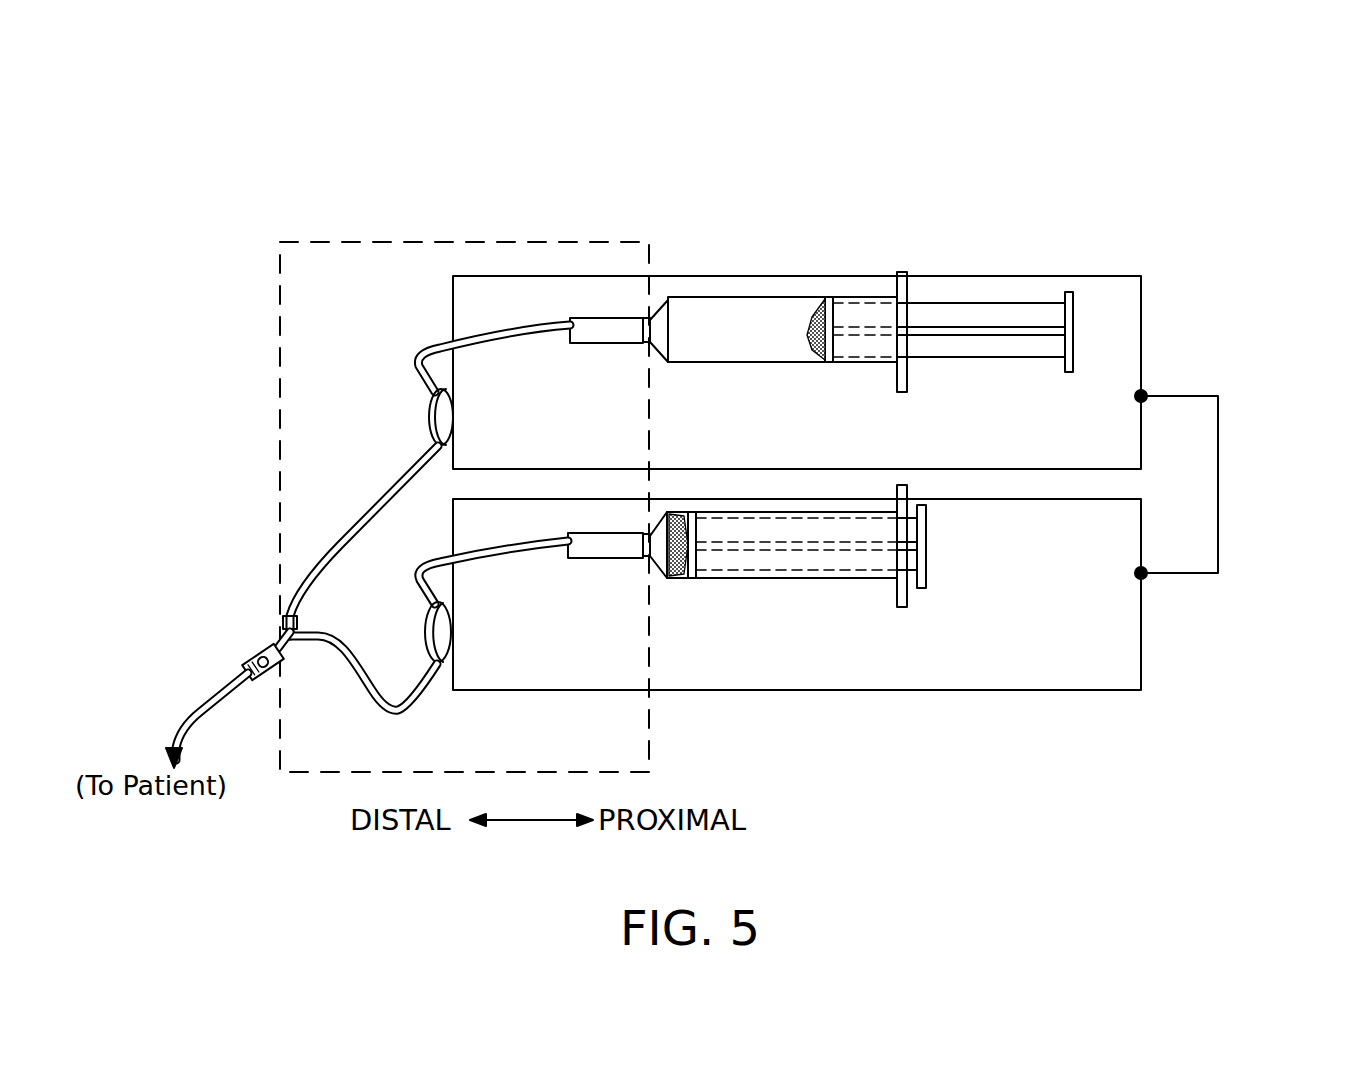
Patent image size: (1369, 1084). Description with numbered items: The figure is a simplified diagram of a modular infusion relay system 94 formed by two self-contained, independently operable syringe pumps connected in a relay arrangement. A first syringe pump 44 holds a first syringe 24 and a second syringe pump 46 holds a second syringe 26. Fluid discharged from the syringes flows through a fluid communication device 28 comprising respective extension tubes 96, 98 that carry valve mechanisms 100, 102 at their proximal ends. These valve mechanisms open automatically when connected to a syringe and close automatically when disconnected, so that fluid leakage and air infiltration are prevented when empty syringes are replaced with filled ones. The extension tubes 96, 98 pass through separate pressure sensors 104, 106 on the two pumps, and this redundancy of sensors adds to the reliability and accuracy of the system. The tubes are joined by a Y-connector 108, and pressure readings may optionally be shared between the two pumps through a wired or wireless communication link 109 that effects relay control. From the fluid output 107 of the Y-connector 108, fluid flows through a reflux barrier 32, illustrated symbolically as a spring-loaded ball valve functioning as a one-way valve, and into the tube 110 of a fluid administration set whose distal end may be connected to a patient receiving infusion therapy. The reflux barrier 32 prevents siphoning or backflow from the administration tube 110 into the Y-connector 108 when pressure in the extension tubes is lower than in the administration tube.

The first syringe 24 is at (757, 363).
The second syringe 26 is at (785, 580).
The fluid communication device 28 is at (525, 242).
The reflux barrier 32 is at (266, 682).
The first syringe pump 44 is at (1142, 322).
The second syringe pump 46 is at (1142, 636).
The modular infusion relay system 94 is at (733, 167).
The extension tube 96 is at (523, 344).
The extension tube 98 is at (527, 562).
The valve mechanism 100 is at (614, 345).
The valve mechanism 102 is at (610, 560).
The pressure sensor 104 is at (428, 413).
The pressure sensor 106 is at (424, 633).
The fluid output 107 is at (276, 640).
The Y-connector 108 is at (284, 632).
The communication link 109 is at (1218, 440).
The tube 110 is at (200, 708).